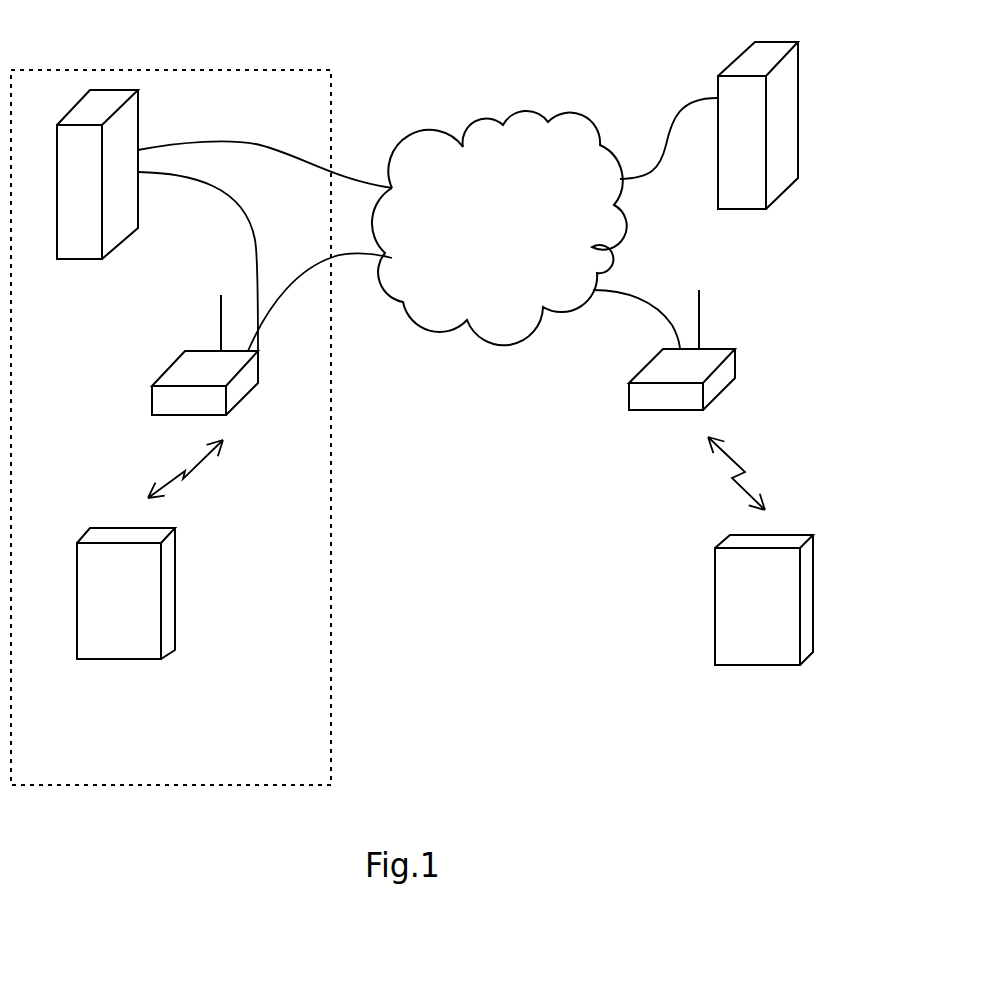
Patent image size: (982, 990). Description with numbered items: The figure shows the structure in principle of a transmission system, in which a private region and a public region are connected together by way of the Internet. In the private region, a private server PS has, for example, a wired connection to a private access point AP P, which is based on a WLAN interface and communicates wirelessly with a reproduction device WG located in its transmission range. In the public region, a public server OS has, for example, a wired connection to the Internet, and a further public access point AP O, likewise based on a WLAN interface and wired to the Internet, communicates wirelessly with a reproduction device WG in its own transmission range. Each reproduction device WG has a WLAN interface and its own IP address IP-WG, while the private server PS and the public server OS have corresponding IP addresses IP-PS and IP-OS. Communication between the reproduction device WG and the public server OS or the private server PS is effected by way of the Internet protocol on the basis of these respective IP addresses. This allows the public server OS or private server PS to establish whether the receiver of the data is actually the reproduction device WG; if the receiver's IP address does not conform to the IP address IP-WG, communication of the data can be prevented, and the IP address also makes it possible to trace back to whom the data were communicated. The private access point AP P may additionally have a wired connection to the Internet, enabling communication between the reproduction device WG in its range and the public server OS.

The private server PS is at (121, 172).
The IP address of the private server IP-PS is at (125, 206).
The private access point AP P is at (175, 355).
The IP address of the reproduction device IP-WG is at (518, 484).
The reproduction device WG is at (474, 596).
The public server OS is at (758, 106).
The IP address of the public server IP-OS is at (788, 145).
The public access point AP O is at (724, 350).
The element Internet is at (499, 228).